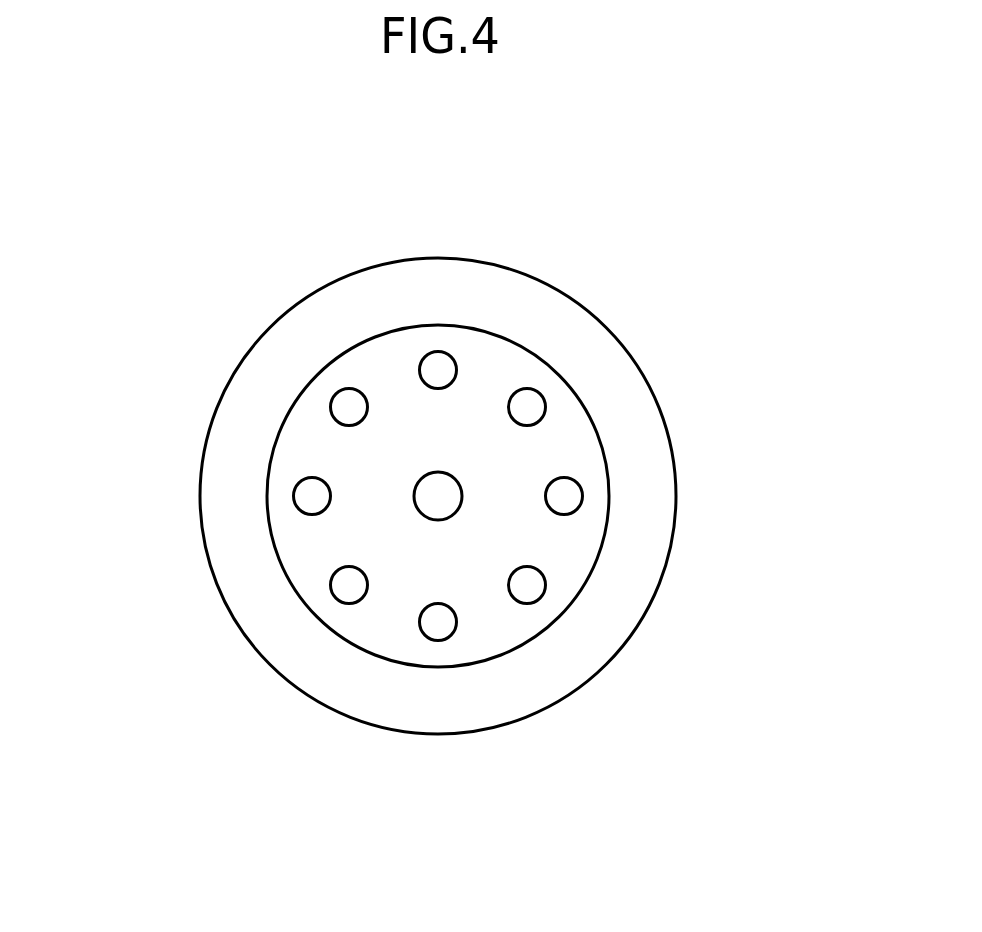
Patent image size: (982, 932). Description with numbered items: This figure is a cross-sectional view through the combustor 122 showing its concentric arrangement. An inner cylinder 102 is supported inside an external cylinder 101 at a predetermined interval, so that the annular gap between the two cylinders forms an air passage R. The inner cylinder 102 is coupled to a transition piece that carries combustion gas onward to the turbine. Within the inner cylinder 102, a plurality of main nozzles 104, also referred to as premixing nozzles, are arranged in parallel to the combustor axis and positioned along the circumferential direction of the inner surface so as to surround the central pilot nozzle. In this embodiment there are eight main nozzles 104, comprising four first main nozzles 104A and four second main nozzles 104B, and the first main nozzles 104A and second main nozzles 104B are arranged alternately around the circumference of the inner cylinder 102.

The combustor 122 is at (586, 201).
The external cylinder 101 is at (523, 273).
The inner cylinder 102 is at (602, 432).
The air passage R is at (638, 446).
The main nozzles 104 is at (439, 497).
The first main nozzles 104A is at (440, 351).
The second main nozzles 104B is at (336, 394).